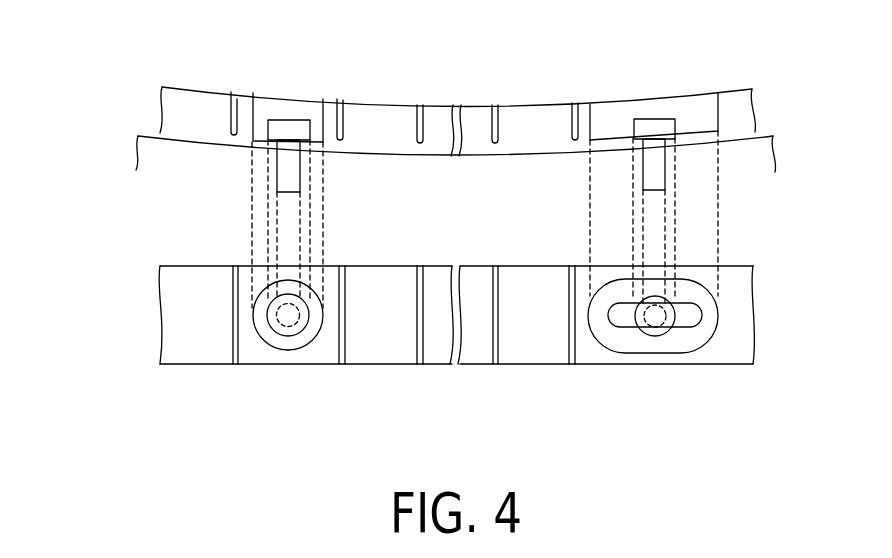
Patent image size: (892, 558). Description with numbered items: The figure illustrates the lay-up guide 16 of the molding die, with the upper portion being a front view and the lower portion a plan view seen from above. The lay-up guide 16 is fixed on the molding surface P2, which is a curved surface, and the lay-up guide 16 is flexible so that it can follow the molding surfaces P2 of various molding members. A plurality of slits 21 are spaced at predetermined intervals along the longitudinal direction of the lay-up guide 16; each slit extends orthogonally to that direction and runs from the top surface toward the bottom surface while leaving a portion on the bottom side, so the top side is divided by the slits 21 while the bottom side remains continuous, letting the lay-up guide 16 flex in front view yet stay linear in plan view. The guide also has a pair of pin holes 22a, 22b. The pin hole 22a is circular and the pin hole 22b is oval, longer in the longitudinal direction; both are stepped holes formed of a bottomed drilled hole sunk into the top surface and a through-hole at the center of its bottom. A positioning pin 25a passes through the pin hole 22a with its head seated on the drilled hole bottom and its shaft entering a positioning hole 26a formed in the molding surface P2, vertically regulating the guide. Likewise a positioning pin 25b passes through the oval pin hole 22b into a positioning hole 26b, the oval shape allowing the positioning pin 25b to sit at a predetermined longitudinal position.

The lay-up guide 16 is at (534, 102).
The slits 21 is at (416, 99).
The pin hole 22a is at (271, 96).
The pin hole 22b is at (633, 96).
The positioning pin 25a is at (287, 119).
The positioning pin 25b is at (652, 119).
The positioning hole 26a is at (297, 167).
The positioning hole 26b is at (648, 169).
The molding surface P2 is at (150, 130).